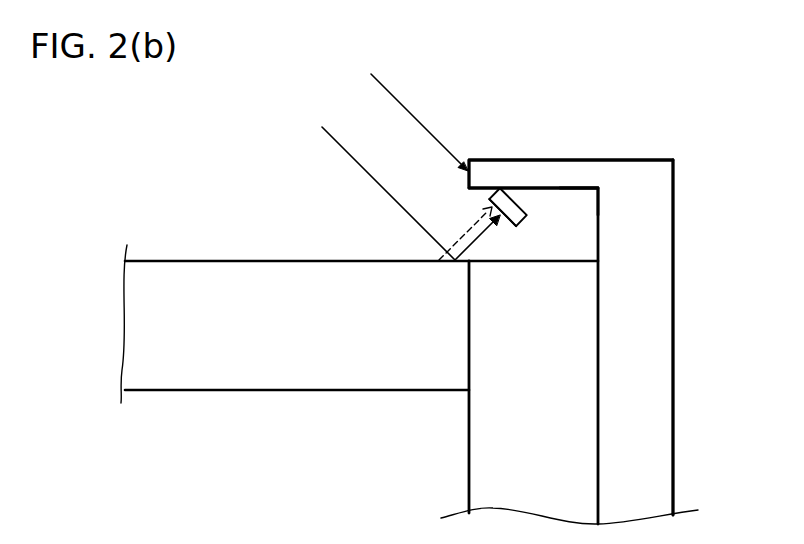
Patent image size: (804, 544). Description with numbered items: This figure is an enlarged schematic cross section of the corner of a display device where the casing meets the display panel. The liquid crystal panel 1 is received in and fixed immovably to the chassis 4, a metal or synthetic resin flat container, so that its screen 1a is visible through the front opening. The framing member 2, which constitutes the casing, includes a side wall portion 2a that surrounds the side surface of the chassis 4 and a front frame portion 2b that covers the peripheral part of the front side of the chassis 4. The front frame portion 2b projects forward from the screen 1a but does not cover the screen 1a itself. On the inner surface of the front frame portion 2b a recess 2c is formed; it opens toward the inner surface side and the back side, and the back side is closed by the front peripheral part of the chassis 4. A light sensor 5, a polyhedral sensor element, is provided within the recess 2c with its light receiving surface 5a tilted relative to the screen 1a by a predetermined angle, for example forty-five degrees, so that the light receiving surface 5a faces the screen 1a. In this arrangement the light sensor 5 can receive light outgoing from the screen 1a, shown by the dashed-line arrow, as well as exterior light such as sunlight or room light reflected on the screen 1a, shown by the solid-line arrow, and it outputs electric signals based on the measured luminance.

The liquid crystal panel 1 is at (247, 286).
The screen 1a is at (327, 268).
The framing member 2 is at (678, 348).
The side wall portion 2a is at (660, 412).
The front frame portion 2b is at (492, 170).
The recess 2c is at (555, 189).
The chassis 4 is at (485, 448).
The light sensor 5 is at (519, 206).
The light receiving surface 5a is at (510, 227).